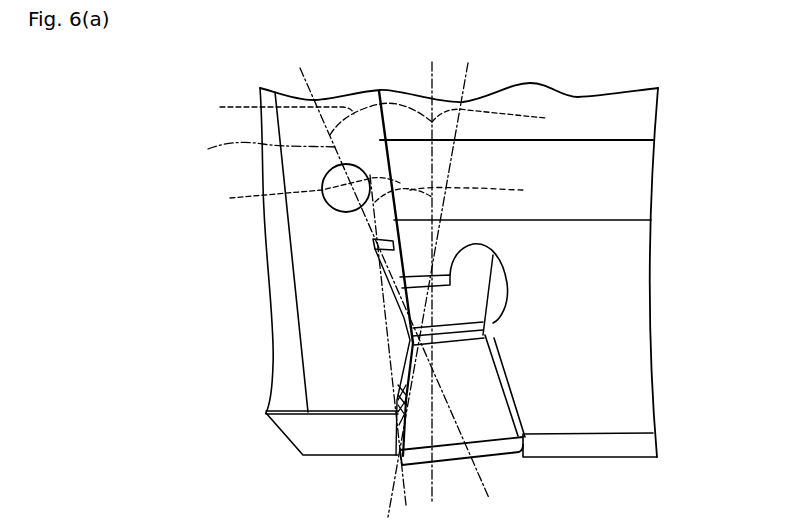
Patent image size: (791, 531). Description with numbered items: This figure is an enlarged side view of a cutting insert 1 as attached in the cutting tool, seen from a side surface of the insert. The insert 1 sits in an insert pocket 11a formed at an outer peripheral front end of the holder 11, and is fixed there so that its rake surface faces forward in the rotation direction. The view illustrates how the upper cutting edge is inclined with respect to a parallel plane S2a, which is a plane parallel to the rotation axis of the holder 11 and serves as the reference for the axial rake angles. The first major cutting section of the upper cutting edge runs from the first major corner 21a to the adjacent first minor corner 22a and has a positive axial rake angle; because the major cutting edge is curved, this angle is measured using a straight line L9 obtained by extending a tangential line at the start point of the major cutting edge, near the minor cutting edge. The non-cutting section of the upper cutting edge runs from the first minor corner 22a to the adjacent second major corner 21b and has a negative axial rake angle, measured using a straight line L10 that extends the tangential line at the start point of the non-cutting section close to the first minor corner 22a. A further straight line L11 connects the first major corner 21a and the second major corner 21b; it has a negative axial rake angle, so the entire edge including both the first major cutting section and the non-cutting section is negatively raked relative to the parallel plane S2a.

The insert 1 is at (506, 383).
The holder 11 is at (620, 115).
The insert pocket 11a is at (340, 378).
The first major corner 21a is at (402, 461).
The second major corner 21b is at (380, 240).
The first minor corner 22a is at (412, 340).
The parallel plane S2a is at (433, 273).
The straight line L9 is at (477, 193).
The straight line L10 is at (253, 150).
The straight line L11 is at (379, 298).